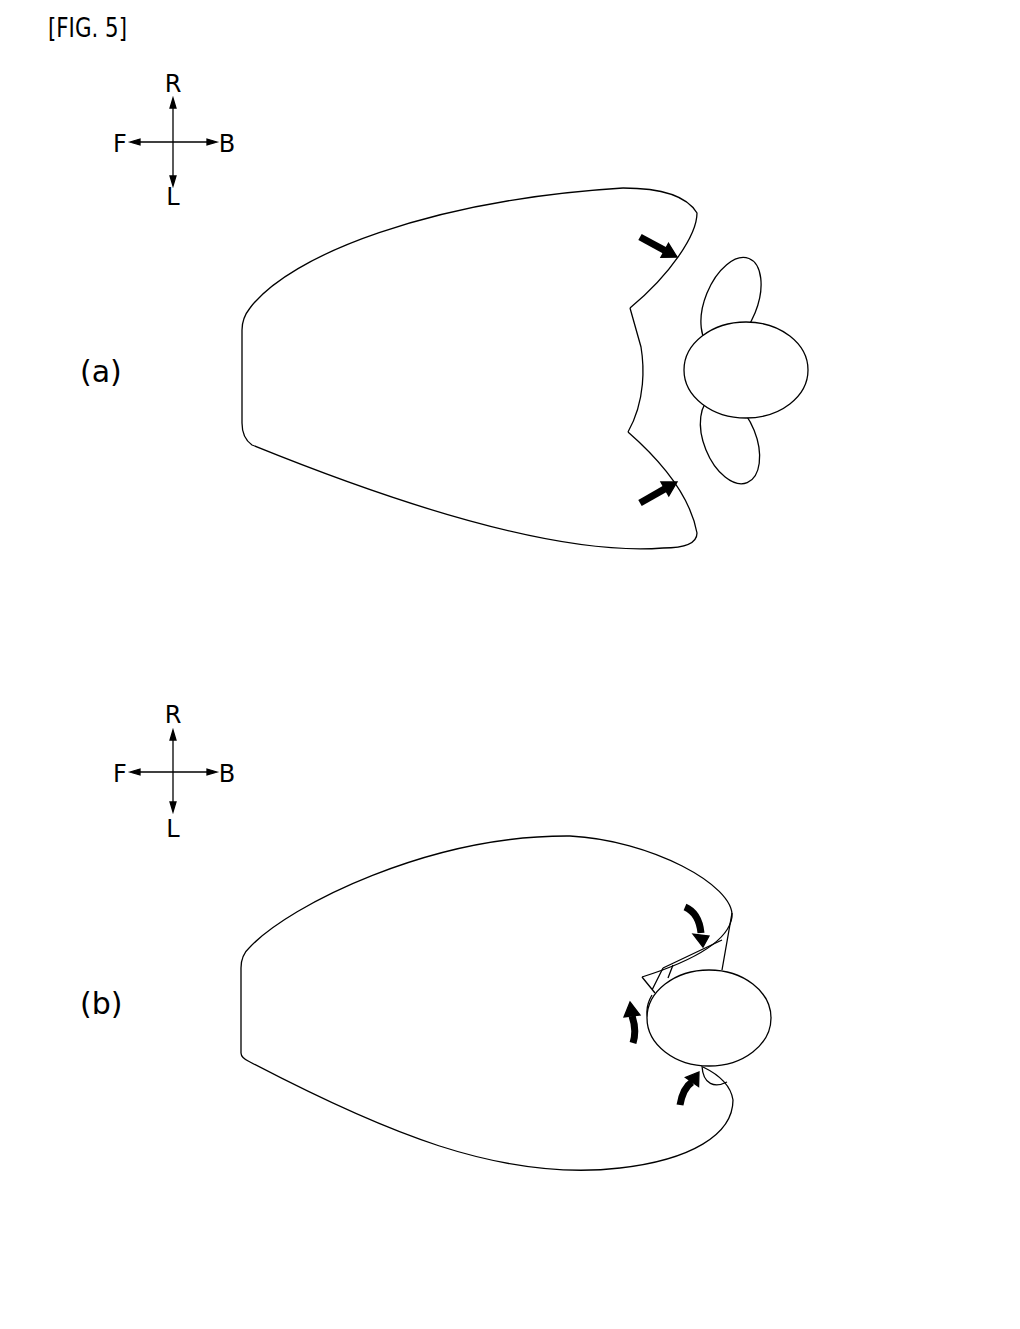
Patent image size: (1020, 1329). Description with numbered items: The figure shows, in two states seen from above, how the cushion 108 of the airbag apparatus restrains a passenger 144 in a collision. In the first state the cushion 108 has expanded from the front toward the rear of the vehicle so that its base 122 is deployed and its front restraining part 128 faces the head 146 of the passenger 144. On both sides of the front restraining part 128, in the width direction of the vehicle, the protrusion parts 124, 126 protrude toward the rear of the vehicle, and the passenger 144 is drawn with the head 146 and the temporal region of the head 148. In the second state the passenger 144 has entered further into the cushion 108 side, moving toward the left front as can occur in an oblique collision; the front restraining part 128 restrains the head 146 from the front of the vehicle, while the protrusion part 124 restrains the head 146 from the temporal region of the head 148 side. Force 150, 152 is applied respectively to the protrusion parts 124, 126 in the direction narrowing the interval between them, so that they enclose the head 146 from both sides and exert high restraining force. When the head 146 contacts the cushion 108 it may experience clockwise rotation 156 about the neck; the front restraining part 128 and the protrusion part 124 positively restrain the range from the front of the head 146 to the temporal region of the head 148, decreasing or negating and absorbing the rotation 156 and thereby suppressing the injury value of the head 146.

The cushion 108 is at (368, 235).
The base 122 is at (347, 485).
The protrusion part 124 is at (667, 532).
The protrusion part 126 is at (668, 205).
The front restraining part 128 is at (633, 347).
The passenger 144 is at (757, 277).
The head 146 is at (797, 357).
The temporal region of the head 148 is at (740, 422).
The force 150 is at (642, 492).
The force 152 is at (645, 247).
The rotation 156 is at (625, 1028).